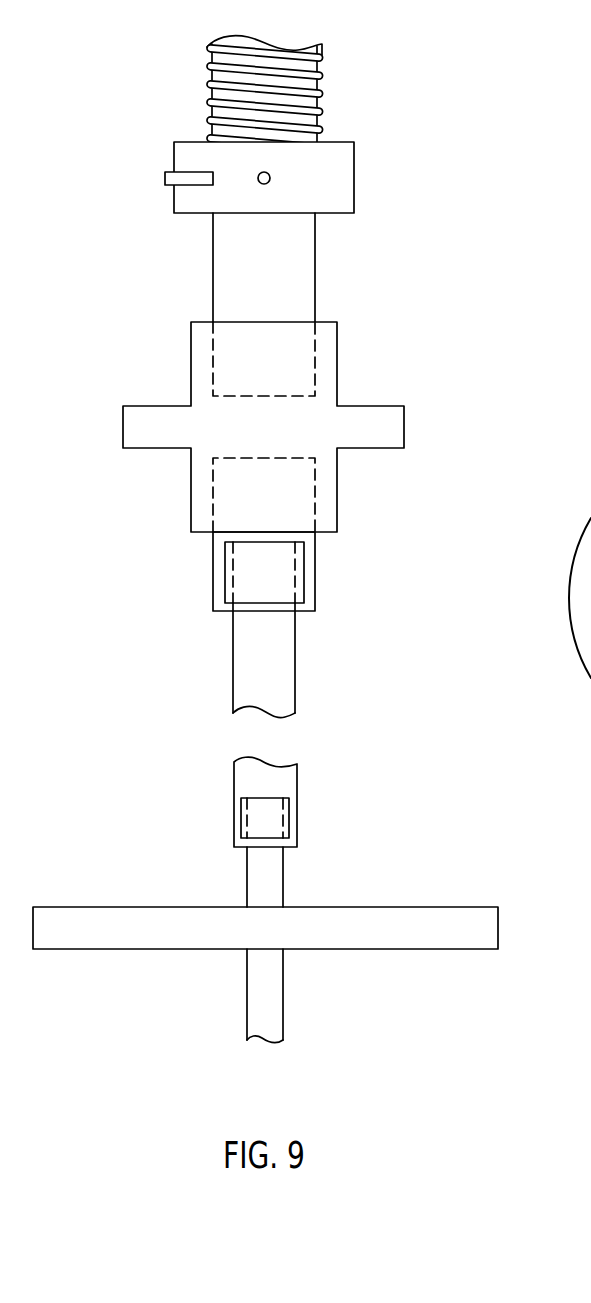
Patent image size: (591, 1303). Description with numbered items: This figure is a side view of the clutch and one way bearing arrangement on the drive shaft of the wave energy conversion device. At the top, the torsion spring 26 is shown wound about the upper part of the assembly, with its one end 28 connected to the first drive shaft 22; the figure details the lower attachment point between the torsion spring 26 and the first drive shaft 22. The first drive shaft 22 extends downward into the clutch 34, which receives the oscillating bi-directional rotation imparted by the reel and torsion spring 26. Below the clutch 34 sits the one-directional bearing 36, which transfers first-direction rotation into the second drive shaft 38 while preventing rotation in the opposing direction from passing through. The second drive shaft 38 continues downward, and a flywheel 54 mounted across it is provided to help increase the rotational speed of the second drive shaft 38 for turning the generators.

The first drive shaft 22 is at (303, 275).
The torsion spring 26 is at (322, 78).
The one end 28 is at (341, 170).
The clutch 34 is at (395, 426).
The one-directional bearing 36 is at (309, 573).
The second drive shaft 38 is at (289, 663).
The flywheel 54 is at (495, 932).